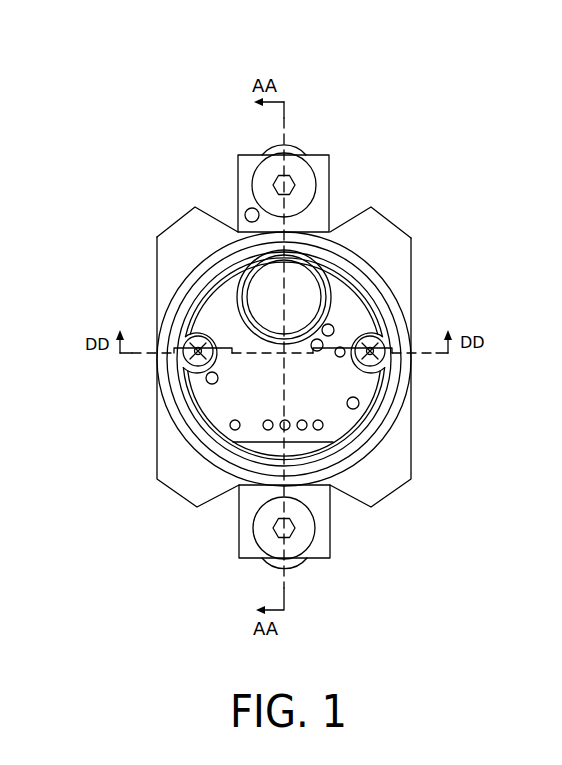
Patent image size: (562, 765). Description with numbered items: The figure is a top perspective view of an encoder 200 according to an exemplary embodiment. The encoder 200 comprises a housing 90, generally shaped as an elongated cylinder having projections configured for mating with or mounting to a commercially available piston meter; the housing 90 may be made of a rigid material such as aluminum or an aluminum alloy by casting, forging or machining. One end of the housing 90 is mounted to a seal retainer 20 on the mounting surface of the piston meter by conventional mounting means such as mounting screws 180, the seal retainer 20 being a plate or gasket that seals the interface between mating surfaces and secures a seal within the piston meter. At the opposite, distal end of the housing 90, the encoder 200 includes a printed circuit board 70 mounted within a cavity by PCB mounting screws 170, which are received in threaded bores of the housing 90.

The encoder 200 is at (378, 78).
The seal retainer 20 is at (293, 145).
The mounting screws 180 is at (267, 172).
The PCB mounting screws 170 is at (190, 353).
The printed circuit board 70 is at (227, 403).
The housing 90 is at (183, 482).